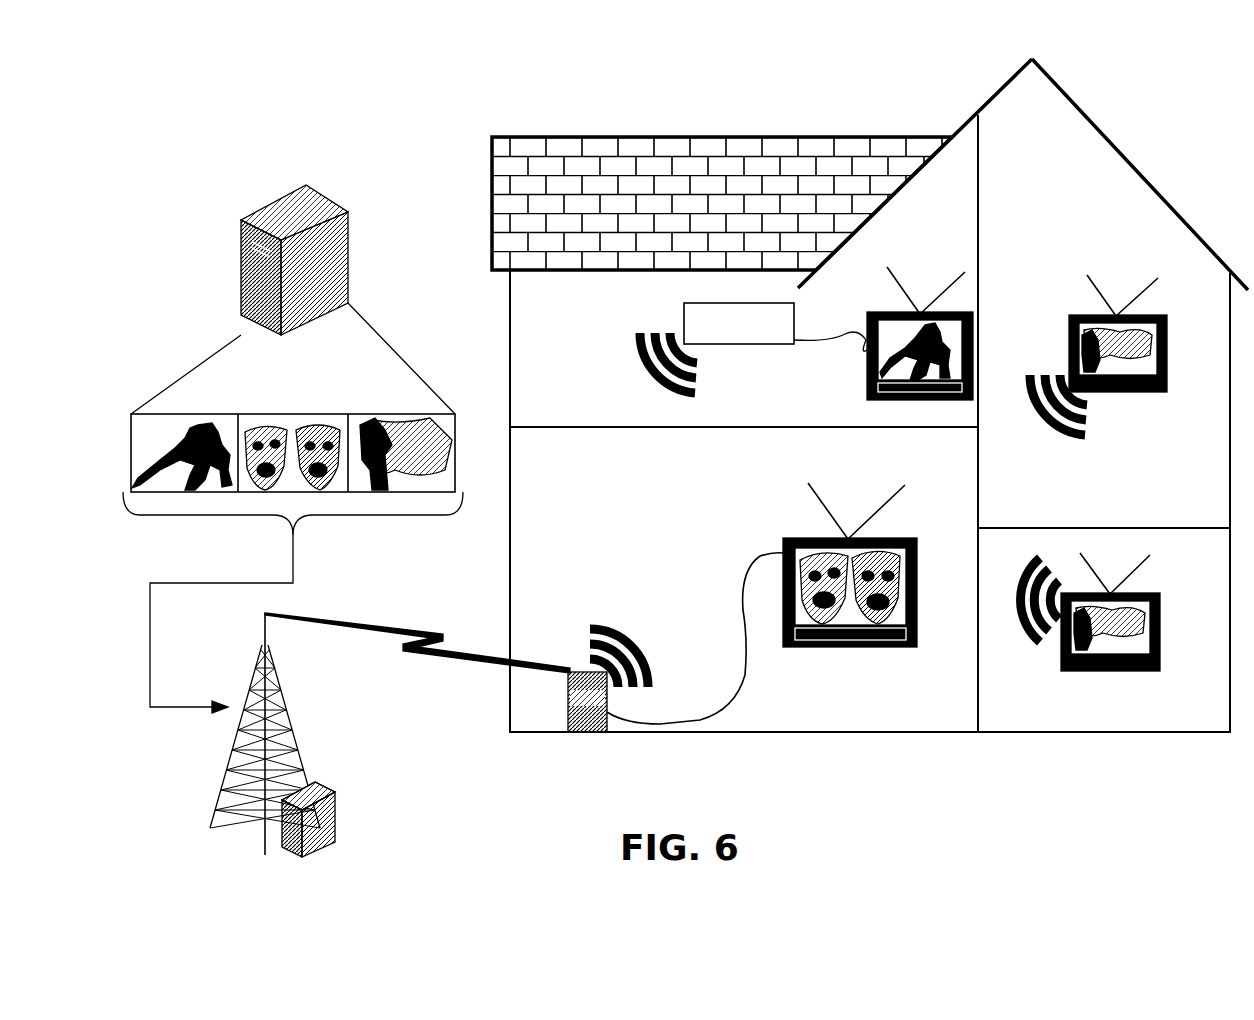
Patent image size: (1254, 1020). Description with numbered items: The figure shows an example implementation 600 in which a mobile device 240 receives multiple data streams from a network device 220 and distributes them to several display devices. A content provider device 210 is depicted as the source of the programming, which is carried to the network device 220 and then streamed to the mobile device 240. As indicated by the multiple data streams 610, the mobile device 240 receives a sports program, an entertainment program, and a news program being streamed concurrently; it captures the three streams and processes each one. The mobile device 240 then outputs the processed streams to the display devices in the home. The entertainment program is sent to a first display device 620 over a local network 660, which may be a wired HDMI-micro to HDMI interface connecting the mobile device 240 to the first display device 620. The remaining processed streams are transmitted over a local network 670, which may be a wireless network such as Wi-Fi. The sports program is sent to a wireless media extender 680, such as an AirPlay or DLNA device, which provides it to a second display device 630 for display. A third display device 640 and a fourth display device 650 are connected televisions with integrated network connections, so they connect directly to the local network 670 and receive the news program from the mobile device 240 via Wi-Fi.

The example implementation 600 is at (220, 52).
The content provider device 210 is at (228, 256).
The multiple data streams 610 is at (300, 414).
The network device 220 is at (428, 850).
The mobile device 240 is at (568, 697).
The first display device 620 is at (783, 540).
The second display device 630 is at (867, 390).
The third display device 640 is at (1069, 330).
The fourth display device 650 is at (1061, 662).
The local network 660 is at (742, 622).
The local network 670 is at (600, 626).
The wireless media extender 680 is at (684, 310).